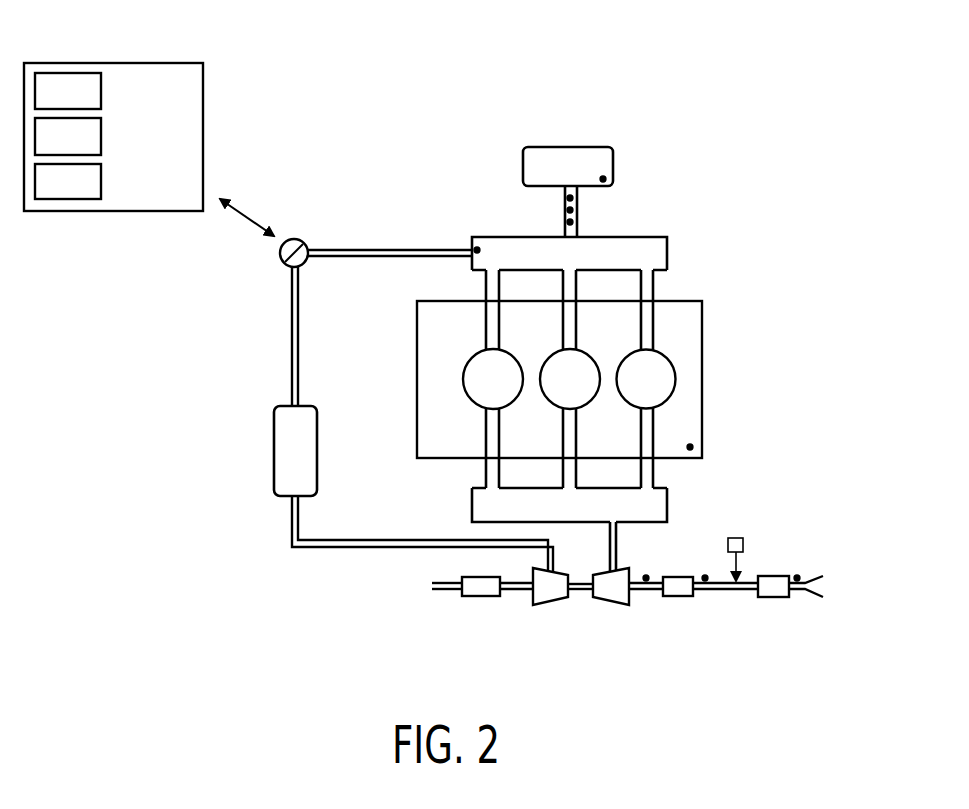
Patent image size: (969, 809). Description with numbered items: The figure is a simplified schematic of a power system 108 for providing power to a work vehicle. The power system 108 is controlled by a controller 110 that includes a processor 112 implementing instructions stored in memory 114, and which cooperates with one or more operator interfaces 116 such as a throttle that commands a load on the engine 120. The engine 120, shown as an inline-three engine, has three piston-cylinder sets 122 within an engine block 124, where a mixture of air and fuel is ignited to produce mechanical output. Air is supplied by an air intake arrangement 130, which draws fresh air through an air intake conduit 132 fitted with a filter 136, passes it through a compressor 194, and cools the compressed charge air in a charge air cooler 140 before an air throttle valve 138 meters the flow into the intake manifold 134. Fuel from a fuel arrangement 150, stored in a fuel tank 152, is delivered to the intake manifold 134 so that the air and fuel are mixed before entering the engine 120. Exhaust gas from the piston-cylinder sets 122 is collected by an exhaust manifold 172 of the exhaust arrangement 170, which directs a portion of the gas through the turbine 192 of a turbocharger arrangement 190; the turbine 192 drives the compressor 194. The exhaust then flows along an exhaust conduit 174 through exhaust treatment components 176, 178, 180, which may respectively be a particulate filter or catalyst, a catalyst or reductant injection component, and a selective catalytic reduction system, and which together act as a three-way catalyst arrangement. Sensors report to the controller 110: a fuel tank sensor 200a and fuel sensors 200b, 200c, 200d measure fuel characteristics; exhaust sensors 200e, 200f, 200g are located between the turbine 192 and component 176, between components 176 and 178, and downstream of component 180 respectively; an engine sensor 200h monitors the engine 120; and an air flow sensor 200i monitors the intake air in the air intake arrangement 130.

The power system 108 is at (161, 122).
The controller 110 is at (113, 137).
The processor 112 is at (49, 105).
The memory 114 is at (49, 150).
The operator interface 116 is at (49, 195).
The engine 120 is at (561, 379).
The piston-cylinder set 122 is at (474, 392).
The engine block 124 is at (432, 326).
The air intake arrangement 130 is at (391, 444).
The air intake conduit 132 is at (448, 592).
The intake manifold 134 is at (667, 250).
The filter 136 is at (490, 598).
The air throttle valve 138 is at (296, 240).
The charge air cooler 140 is at (274, 450).
The fuel arrangement 150 is at (538, 153).
The fuel tank 152 is at (568, 147).
The exhaust arrangement 170 is at (776, 574).
The exhaust manifold 172 is at (472, 500).
The exhaust conduit 174 is at (823, 596).
The exhaust treatment component 176 is at (678, 598).
The exhaust treatment component 178 is at (743, 545).
The exhaust treatment component 180 is at (776, 599).
The turbocharger arrangement 190 is at (592, 640).
The turbine 192 is at (607, 606).
The compressor 194 is at (552, 606).
The fuel tank sensor 200a is at (605, 178).
The fuel sensor 200b is at (572, 198).
The fuel sensor 200c is at (568, 210).
The fuel sensor 200d is at (572, 222).
The exhaust sensor 200e is at (647, 576).
The exhaust sensor 200f is at (705, 576).
The exhaust sensor 200g is at (798, 577).
The engine sensor 200h is at (692, 446).
The air flow sensor 200i is at (477, 248).